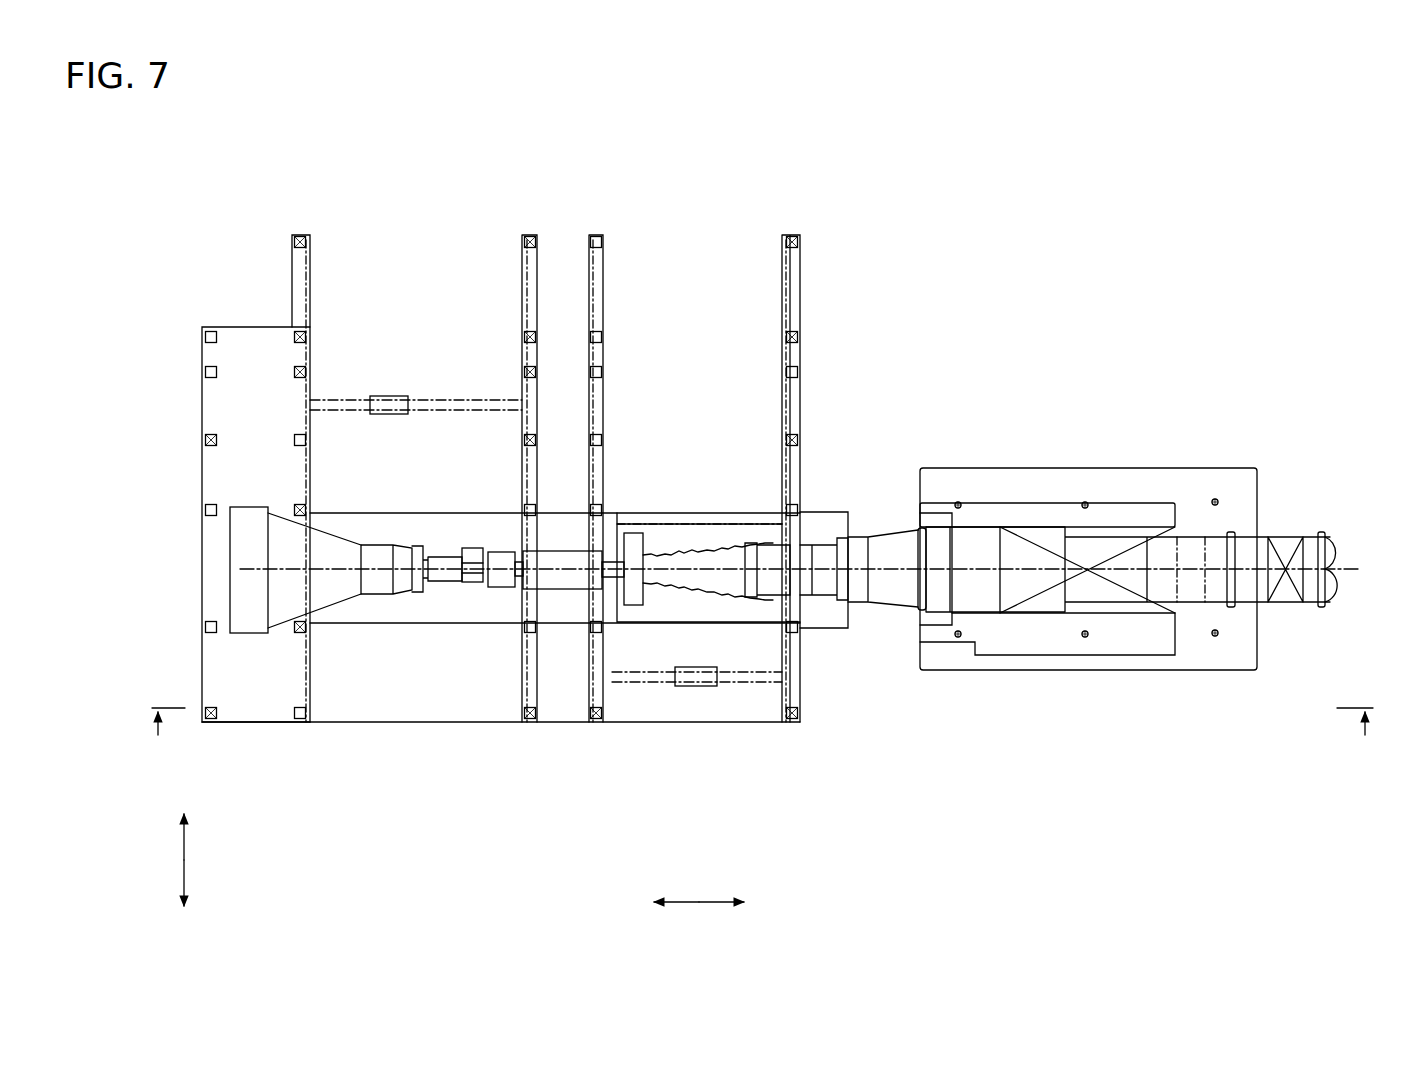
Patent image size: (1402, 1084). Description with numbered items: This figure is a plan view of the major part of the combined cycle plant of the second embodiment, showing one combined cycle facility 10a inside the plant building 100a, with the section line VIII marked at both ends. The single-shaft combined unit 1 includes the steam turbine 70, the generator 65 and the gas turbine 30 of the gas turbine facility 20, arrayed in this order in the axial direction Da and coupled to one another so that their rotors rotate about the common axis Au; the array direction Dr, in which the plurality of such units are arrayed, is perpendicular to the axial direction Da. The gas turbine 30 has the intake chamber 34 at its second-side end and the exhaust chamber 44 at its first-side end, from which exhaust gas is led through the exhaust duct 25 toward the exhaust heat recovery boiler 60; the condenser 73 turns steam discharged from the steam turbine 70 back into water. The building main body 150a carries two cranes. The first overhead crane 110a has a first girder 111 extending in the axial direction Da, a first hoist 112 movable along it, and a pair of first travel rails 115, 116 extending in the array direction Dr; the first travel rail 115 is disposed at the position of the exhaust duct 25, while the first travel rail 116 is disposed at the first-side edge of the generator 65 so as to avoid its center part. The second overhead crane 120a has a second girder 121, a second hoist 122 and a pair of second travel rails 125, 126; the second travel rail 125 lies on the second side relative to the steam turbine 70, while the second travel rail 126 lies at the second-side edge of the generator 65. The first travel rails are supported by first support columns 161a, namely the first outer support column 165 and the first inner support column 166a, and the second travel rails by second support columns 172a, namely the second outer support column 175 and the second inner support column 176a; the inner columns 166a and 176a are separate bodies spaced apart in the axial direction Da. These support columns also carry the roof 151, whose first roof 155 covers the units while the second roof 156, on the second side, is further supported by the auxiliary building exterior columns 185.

The single-shaft combined unit 1 is at (253, 588).
The combined cycle facility 10a is at (1128, 564).
The gas turbine facility 20 is at (708, 511).
The exhaust duct 25 is at (885, 531).
The gas turbine 30 is at (693, 540).
The intake chamber 34 is at (637, 533).
The exhaust chamber 44 is at (750, 543).
The exhaust heat recovery boiler 60 is at (1163, 433).
The generator 65 is at (558, 598).
The steam turbine 70 is at (404, 600).
The condenser 73 is at (248, 641).
The plant building 100a is at (435, 505).
The first overhead crane 110a is at (688, 766).
The first girder 111 is at (688, 766).
The first hoist 112 is at (643, 725).
The first travel rail 115 is at (845, 506).
The first travel rail 116 is at (610, 498).
The second overhead crane 120a is at (416, 325).
The second girder 121 is at (416, 325).
The second hoist 122 is at (348, 396).
The second travel rail 125 is at (257, 503).
The second travel rail 126 is at (512, 488).
The building main body 150a is at (196, 348).
The roof 151 is at (555, 655).
The first roof 155 is at (360, 725).
The second roof 156 is at (245, 725).
The first support column 161a is at (845, 506).
The first outer support column 165 is at (781, 275).
The first inner support column 166a is at (605, 283).
The second support column 172a is at (257, 503).
The second outer support column 175 is at (313, 272).
The second inner support column 176a is at (521, 288).
The auxiliary building exterior column 185 is at (205, 439).
The axis Au is at (253, 588).
The array direction Dr is at (167, 860).
The axial direction Da is at (691, 916).
The section line VIII is at (761, 738).